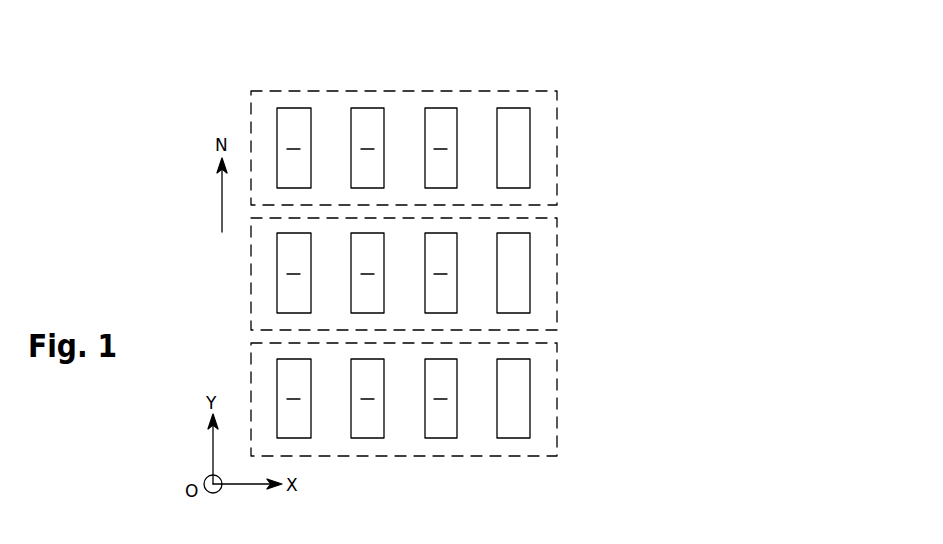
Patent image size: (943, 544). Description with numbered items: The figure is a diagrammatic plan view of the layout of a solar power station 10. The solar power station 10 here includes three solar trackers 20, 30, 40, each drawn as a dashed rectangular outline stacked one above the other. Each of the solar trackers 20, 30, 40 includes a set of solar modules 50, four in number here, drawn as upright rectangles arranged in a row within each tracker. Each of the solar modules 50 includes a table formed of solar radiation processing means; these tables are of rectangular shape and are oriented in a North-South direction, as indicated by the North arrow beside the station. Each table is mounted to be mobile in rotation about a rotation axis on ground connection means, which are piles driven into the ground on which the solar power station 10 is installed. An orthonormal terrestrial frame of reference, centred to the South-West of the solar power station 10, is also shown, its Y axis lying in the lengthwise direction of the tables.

The solar power station 10 is at (253, 58).
The solar tracker 20 is at (557, 148).
The solar tracker 30 is at (557, 298).
The solar tracker 40 is at (557, 395).
The solar module 50 is at (441, 108).